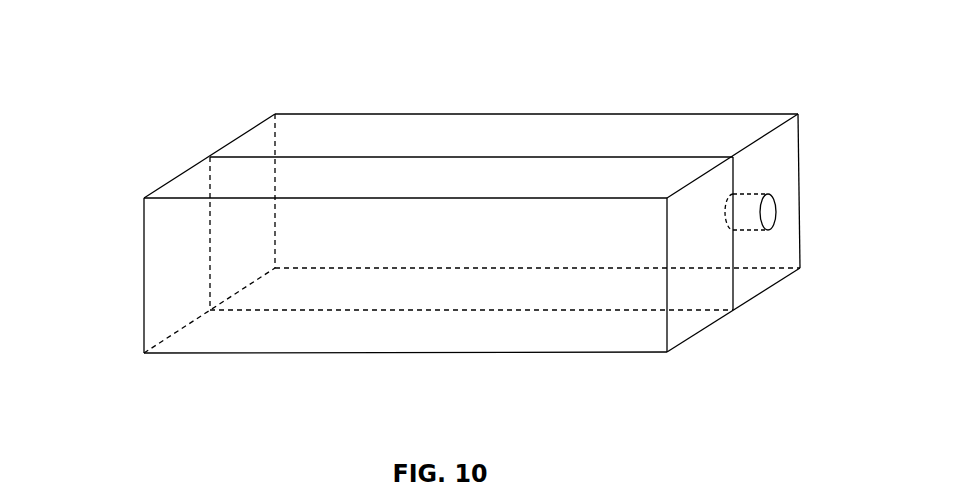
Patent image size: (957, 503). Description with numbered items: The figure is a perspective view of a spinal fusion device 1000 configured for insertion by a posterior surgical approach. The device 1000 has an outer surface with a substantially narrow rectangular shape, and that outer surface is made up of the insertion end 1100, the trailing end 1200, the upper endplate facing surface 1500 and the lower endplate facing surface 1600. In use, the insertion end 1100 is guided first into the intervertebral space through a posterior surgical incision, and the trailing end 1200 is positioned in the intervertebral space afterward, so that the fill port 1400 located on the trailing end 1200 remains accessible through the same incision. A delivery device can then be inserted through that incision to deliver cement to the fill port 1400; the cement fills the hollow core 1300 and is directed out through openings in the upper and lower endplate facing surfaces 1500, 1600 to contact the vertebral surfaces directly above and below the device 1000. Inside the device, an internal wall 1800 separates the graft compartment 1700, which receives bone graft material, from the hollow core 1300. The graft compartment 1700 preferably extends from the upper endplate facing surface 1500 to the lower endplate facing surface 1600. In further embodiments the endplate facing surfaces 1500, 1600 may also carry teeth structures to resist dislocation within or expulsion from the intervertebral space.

The spinal fusion device 1000 is at (133, 70).
The insertion end 1100 is at (128, 331).
The trailing end 1200 is at (805, 261).
The hollow core 1300 is at (689, 125).
The fill port 1400 is at (770, 212).
The upper endplate facing surface 1500 is at (505, 95).
The lower endplate facing surface 1600 is at (426, 375).
The graft compartment 1700 is at (197, 185).
The internal wall 1800 is at (357, 155).